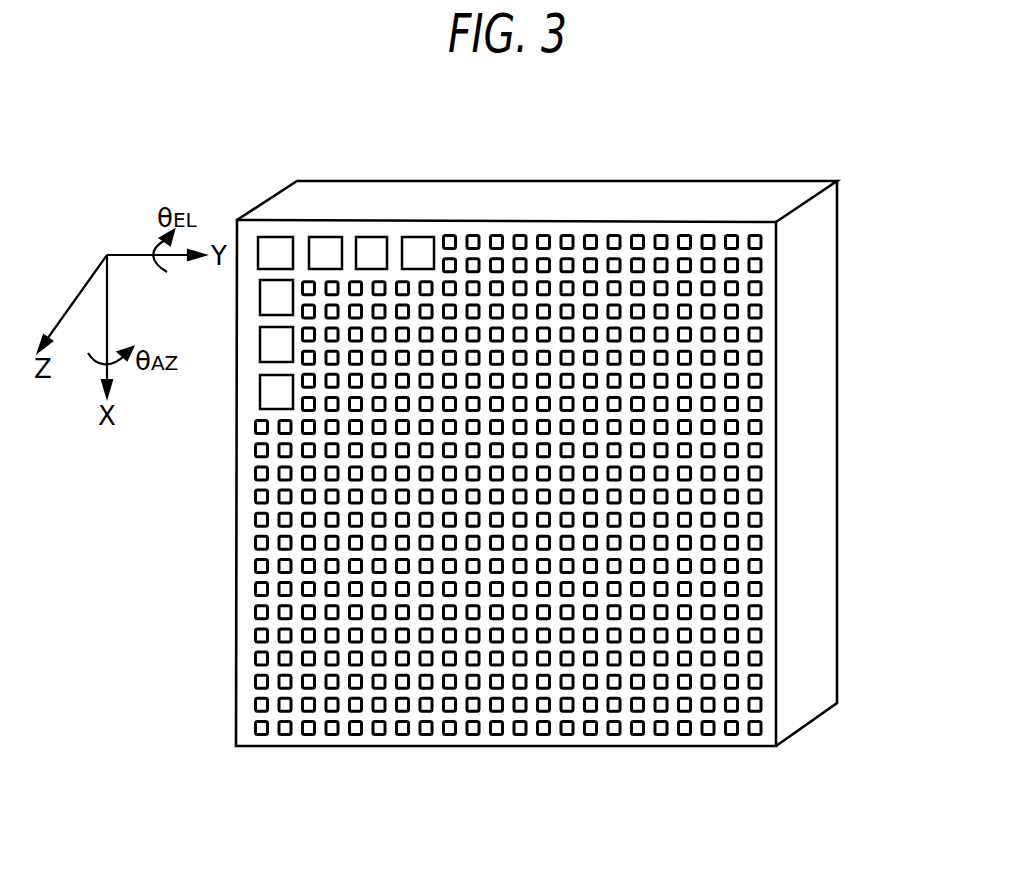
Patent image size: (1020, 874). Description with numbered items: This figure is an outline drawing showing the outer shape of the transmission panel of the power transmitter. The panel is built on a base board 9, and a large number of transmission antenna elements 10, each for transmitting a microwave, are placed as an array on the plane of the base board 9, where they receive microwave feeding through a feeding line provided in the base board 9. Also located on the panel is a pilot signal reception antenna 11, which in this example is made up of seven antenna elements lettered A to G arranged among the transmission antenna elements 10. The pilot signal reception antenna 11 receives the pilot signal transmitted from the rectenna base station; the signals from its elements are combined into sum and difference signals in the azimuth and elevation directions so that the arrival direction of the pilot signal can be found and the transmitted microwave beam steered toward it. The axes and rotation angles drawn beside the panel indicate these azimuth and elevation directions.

The base board 9 is at (837, 398).
The transmission antenna element 10 is at (765, 287).
The pilot signal reception antenna 11 is at (372, 237).